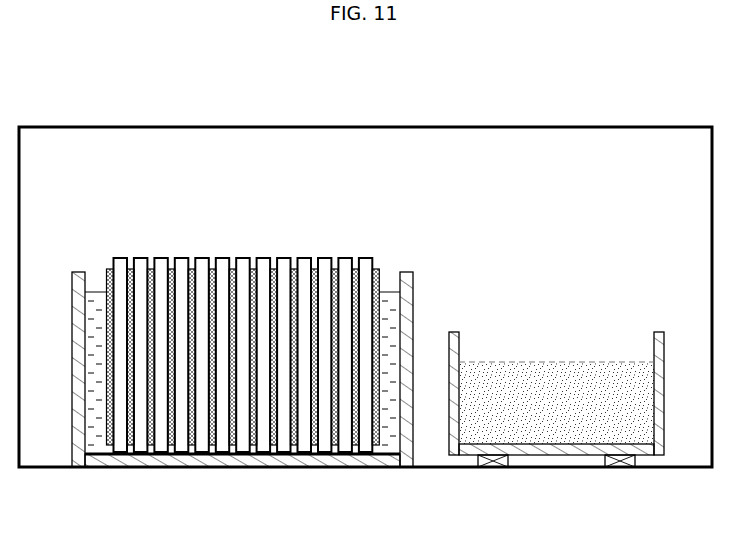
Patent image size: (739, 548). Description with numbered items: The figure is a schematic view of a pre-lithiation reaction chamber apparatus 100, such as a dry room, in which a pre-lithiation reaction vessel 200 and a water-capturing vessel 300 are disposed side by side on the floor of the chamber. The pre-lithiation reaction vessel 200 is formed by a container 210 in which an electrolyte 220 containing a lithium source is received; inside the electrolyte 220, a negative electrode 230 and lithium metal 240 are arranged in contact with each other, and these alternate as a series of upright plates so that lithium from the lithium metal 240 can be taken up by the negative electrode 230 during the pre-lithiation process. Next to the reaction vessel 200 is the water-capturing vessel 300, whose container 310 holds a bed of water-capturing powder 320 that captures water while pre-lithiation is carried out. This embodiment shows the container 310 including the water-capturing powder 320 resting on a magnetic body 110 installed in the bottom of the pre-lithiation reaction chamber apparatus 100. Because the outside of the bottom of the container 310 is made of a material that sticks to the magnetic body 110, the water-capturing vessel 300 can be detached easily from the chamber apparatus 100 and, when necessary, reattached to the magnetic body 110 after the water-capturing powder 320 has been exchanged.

The pre-lithiation reaction chamber apparatus 100 is at (438, 126).
The magnetic body 110 is at (499, 469).
The pre-lithiation reaction vessel 200 is at (188, 224).
The container 210 is at (413, 303).
The electrolyte 220 is at (386, 292).
The negative electrode 230 is at (284, 262).
The lithium metal 240 is at (339, 258).
The water-capturing vessel 300 is at (611, 269).
The container 310 is at (666, 342).
The water-capturing powder 320 is at (563, 373).